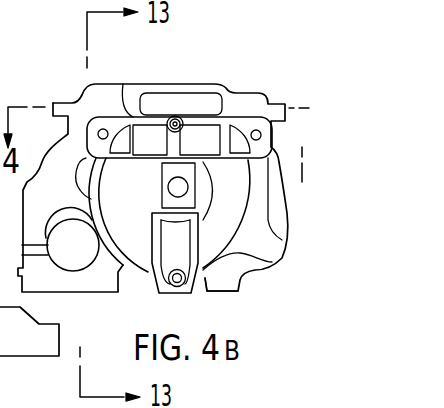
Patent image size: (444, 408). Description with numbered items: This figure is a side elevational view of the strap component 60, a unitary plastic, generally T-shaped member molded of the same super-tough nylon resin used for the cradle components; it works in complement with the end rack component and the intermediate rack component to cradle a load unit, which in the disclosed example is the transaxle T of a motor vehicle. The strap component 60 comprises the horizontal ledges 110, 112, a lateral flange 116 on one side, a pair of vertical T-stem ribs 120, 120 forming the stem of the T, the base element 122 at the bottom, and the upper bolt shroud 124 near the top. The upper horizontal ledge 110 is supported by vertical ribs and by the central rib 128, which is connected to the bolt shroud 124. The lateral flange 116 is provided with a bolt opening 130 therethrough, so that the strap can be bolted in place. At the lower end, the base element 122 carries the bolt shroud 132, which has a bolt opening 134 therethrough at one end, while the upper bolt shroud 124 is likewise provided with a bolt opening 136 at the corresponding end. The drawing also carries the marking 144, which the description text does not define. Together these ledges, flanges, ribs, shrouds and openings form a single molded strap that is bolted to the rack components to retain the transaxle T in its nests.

The strap component 60 is at (216, 107).
The upper horizontal ledge 110 is at (141, 115).
The horizontal ledge 112 is at (190, 140).
The lateral flange 116 is at (113, 124).
The vertical T-stem rib 120 is at (153, 222).
The base element 122 is at (197, 293).
The upper bolt shroud 124 is at (190, 113).
The central rib 128 is at (150, 140).
The bolt opening 130 is at (98, 134).
The bolt shroud 132 is at (182, 270).
The bolt opening 134 is at (164, 291).
The bolt opening 136 is at (151, 101).
The housing ear 144 is at (264, 96).
The transaxle T is at (177, 80).